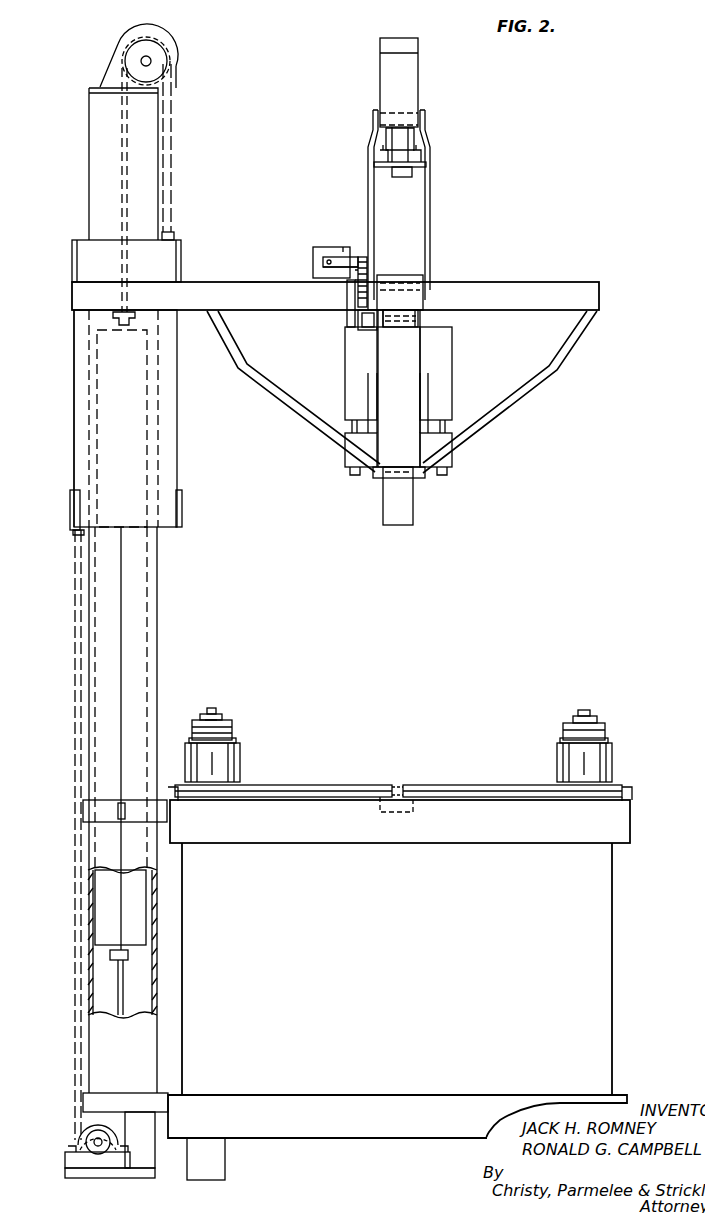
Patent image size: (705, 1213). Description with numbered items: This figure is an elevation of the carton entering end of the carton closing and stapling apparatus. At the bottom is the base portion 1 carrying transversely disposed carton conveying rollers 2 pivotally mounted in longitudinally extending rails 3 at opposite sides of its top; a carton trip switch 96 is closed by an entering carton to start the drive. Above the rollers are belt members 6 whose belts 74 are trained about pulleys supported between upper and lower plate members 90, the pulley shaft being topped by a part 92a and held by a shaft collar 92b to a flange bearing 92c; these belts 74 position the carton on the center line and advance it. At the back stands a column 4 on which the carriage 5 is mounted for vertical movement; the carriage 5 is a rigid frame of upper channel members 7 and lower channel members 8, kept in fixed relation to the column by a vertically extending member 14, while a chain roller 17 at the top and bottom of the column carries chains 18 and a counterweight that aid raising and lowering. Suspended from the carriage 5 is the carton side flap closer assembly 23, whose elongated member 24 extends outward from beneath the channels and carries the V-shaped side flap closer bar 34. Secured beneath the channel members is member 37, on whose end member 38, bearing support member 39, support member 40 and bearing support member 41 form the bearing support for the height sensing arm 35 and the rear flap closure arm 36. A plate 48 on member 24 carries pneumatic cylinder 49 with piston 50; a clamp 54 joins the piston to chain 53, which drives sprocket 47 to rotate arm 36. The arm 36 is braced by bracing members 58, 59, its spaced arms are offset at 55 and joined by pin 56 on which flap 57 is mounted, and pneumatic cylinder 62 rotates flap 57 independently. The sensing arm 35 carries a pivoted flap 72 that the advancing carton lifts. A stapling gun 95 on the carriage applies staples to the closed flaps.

The base portion 1 is at (400, 914).
The carton conveying rollers 2 is at (338, 785).
The longitudinally extending rails 3 is at (170, 787).
The column 4 is at (100, 136).
The carriage 5 is at (62, 407).
The belt members 6 is at (391, 714).
The upper channel members 7 is at (72, 258).
The lower channel members 8 is at (70, 510).
The vertically extending member 14 is at (177, 420).
The chain roller 17 is at (124, 58).
The chains 18 is at (173, 138).
The carton side flap closer assembly 23 is at (427, 392).
The elongated member 24 is at (520, 282).
The V-shaped carton side flap closer bar 34 is at (510, 408).
The height sensing arm 35 is at (408, 365).
The carton rear flap closure arm 36 is at (370, 165).
The member 37 is at (245, 282).
The member 38 is at (347, 297).
The bearing support member 39 is at (362, 330).
The support member 40 is at (423, 303).
The bearing support member 41 is at (420, 270).
The sprocket 47 is at (369, 272).
The plate 48 is at (343, 247).
The pneumatic cylinder 49 is at (318, 247).
The piston 50 is at (323, 262).
The chain 53 is at (356, 268).
The clamp 54 is at (330, 268).
The offset 55 is at (372, 130).
The pin 56 is at (400, 112).
The flap 57 is at (410, 74).
The bracing member 58 is at (420, 142).
The bracing member 59 is at (428, 165).
The pneumatic cylinder 62 is at (408, 142).
The flap 72 is at (413, 512).
The belts 74 is at (240, 755).
The plate members 90 is at (236, 737).
The nozzle tip 92a is at (211, 708).
The shaft collar 92b is at (203, 714).
The flange bearing 92c is at (218, 722).
The stapling gun 95 is at (452, 353).
The carton trip switch 96 is at (380, 810).